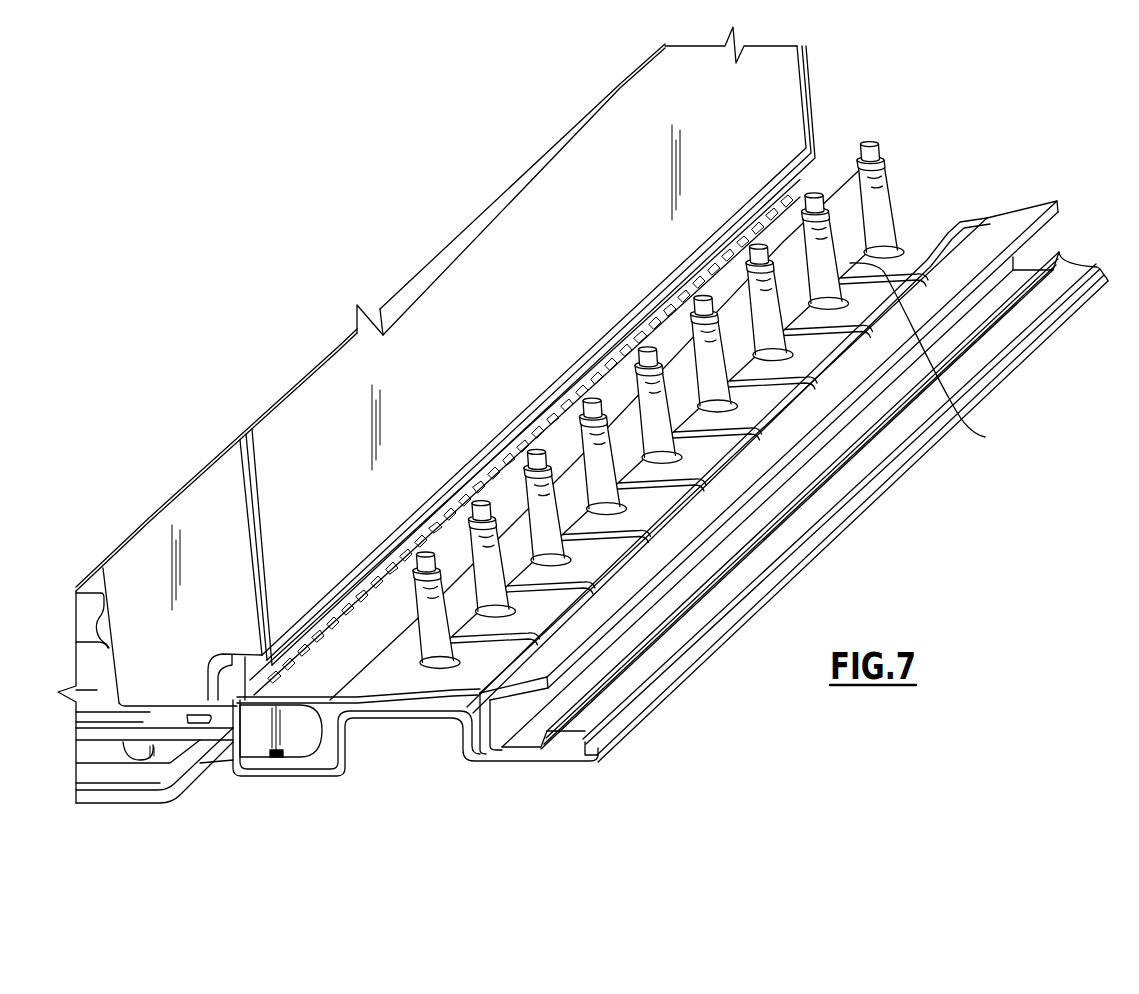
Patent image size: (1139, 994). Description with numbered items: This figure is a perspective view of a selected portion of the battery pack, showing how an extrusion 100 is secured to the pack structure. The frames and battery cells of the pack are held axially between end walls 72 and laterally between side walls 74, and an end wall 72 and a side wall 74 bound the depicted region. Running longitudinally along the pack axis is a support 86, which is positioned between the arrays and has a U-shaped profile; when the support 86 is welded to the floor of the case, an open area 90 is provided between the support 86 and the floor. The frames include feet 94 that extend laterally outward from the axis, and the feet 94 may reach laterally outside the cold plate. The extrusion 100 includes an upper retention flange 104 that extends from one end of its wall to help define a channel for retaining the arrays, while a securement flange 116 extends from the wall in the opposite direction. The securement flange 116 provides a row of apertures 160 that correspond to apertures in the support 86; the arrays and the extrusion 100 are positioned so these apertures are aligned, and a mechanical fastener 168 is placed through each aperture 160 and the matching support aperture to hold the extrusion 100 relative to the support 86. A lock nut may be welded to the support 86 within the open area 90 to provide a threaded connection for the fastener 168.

The end wall 72 is at (163, 750).
The side wall 74 is at (780, 97).
The support 86 is at (472, 730).
The open area 90 is at (406, 734).
The foot 94 is at (262, 740).
The extrusion 100 is at (613, 434).
The upper retention flange 104 is at (740, 382).
The securement flange 116 is at (939, 358).
The aperture 160 is at (882, 257).
The mechanical fastener 168 is at (896, 194).